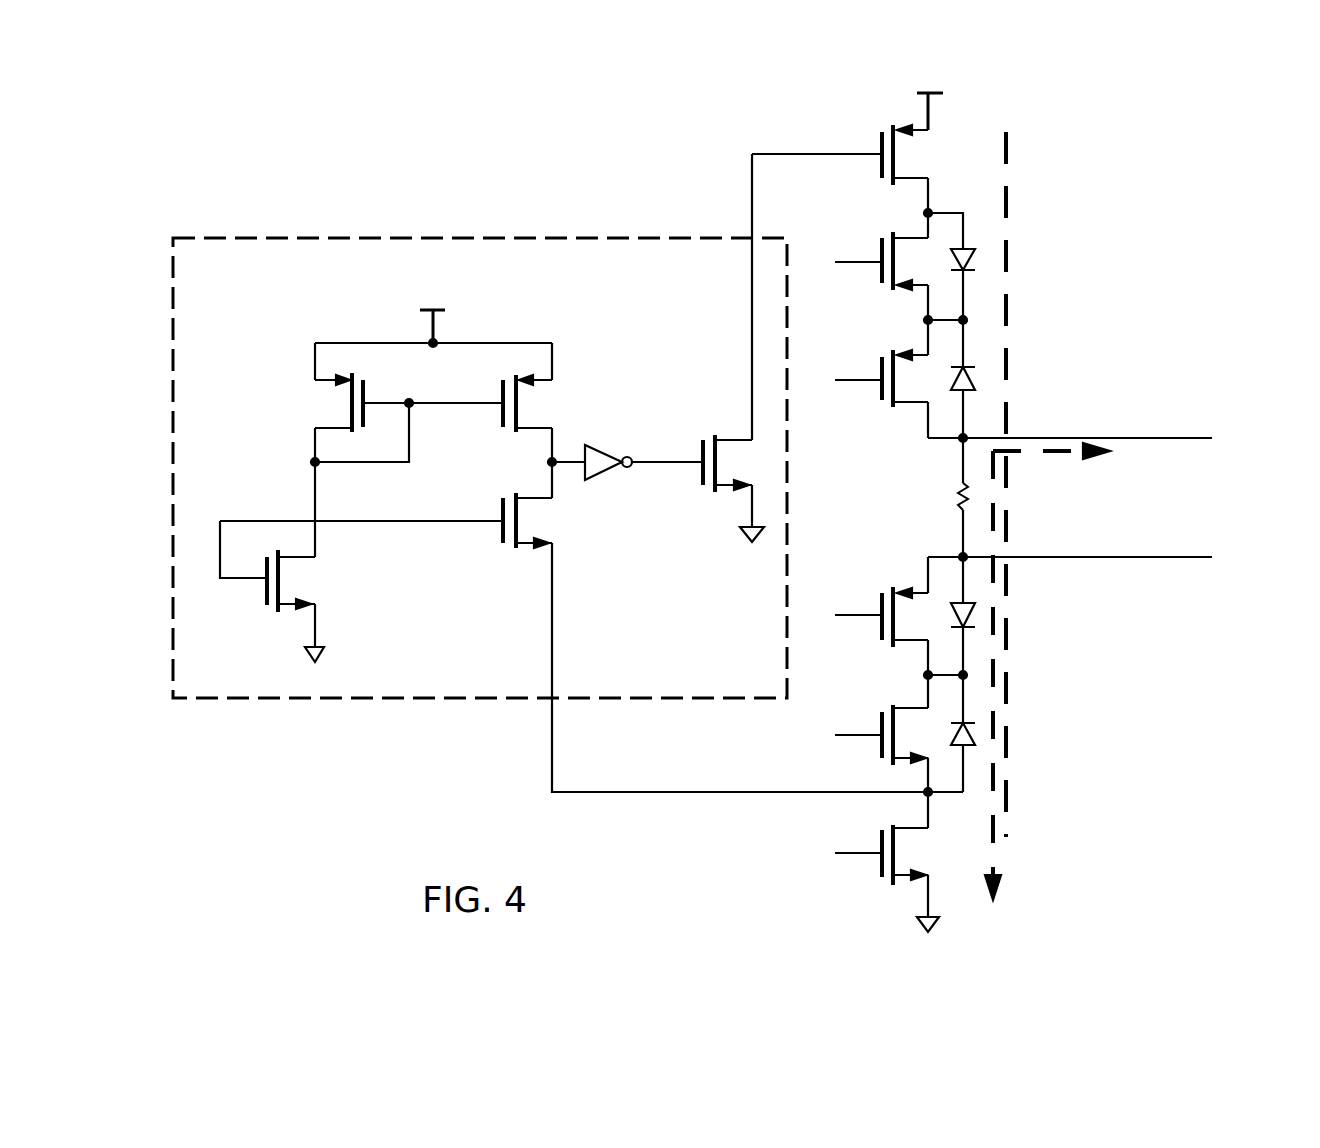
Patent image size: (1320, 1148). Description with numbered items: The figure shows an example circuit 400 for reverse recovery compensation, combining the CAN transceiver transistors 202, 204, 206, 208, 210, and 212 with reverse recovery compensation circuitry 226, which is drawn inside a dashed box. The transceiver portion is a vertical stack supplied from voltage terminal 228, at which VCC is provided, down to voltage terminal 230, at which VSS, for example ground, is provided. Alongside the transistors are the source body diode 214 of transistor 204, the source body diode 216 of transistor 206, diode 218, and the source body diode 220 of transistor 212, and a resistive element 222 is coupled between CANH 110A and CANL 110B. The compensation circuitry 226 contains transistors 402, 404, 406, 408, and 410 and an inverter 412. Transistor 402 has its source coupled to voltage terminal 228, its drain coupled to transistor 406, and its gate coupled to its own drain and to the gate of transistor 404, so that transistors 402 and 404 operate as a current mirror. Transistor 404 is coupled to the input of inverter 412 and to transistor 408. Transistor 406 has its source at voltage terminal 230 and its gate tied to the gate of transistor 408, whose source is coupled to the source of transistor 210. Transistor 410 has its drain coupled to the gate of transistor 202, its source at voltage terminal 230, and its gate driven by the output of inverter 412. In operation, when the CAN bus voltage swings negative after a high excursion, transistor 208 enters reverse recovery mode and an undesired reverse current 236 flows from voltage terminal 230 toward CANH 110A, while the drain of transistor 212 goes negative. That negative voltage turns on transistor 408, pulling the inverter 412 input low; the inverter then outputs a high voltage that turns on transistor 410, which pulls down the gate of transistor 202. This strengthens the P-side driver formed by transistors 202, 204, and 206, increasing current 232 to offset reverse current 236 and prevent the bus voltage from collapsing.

The circuit 400 is at (230, 105).
The reverse recovery compensation circuitry 226 is at (268, 300).
The voltage terminal 228 is at (420, 312).
The transistor 402 is at (364, 394).
The transistor 404 is at (500, 414).
The transistor 406 is at (264, 593).
The transistor 408 is at (500, 530).
The transistor 410 is at (700, 475).
The inverter 412 is at (628, 433).
The voltage terminal 230 is at (306, 655).
The transistor 202 is at (879, 168).
The transistor 204 is at (879, 276).
The transistor 206 is at (879, 392).
The transistor 208 is at (879, 628).
The transistor 210 is at (879, 746).
The transistor 212 is at (879, 865).
The source body diode 214 is at (970, 265).
The source body diode 216 is at (975, 372).
The diode 218 is at (972, 620).
The source body diode 220 is at (975, 730).
The resistive element 222 is at (958, 494).
The current 232 is at (1007, 813).
The reverse current 236 is at (1062, 455).
The CANH 110A is at (1190, 437).
The CANL 110B is at (1190, 558).